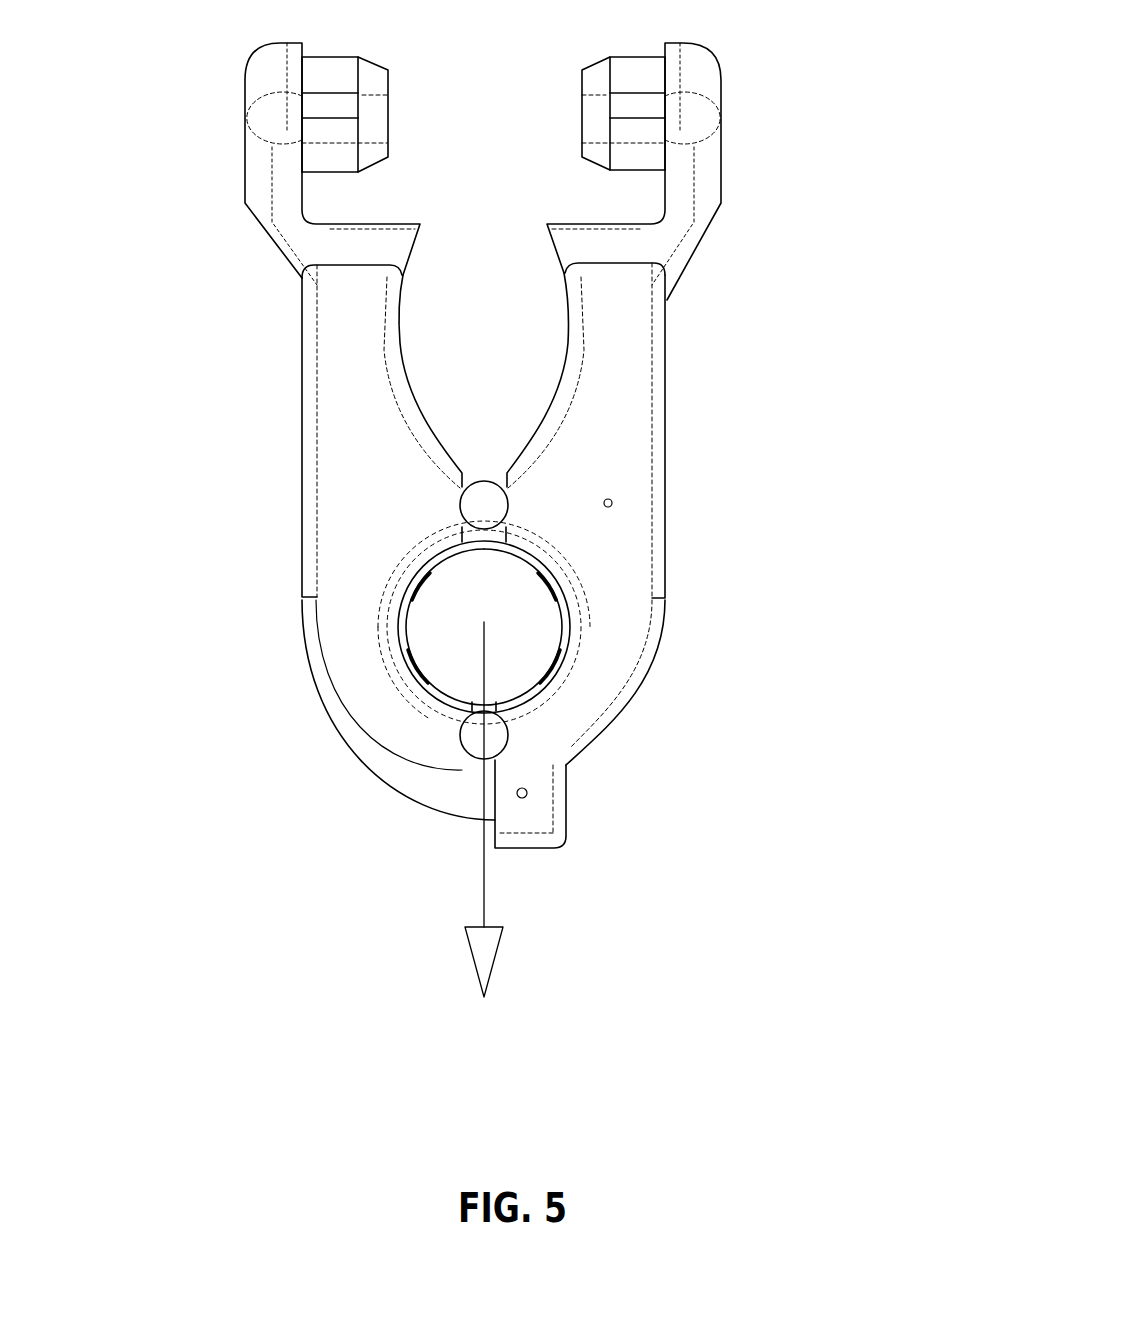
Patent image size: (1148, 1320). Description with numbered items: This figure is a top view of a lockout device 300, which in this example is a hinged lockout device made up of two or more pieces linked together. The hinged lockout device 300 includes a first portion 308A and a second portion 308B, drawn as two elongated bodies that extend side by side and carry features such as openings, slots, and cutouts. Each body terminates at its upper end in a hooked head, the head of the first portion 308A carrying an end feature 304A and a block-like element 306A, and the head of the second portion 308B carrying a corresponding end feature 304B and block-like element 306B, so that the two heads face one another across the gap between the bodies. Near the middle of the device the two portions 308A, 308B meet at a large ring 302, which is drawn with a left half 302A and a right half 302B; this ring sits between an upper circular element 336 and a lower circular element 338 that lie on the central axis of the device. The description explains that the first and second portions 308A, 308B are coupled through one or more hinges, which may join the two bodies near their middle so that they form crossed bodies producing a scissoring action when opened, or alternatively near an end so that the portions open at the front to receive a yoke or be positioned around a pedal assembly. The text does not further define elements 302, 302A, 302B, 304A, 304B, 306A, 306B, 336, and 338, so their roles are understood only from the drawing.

The lockout device 300 is at (289, 437).
The ring clamp 302 is at (394, 664).
The first ring half 302A is at (392, 592).
The second ring half 302B is at (572, 657).
The first hook arm 304A is at (315, 194).
The second hook arm 304B is at (647, 201).
The first fastener head 306A is at (309, 75).
The second fastener head 306B is at (654, 77).
The first portion 308A is at (330, 366).
The second portion 308B is at (634, 386).
The upper pivot pin 336 is at (486, 463).
The lower pivot pin 338 is at (478, 774).